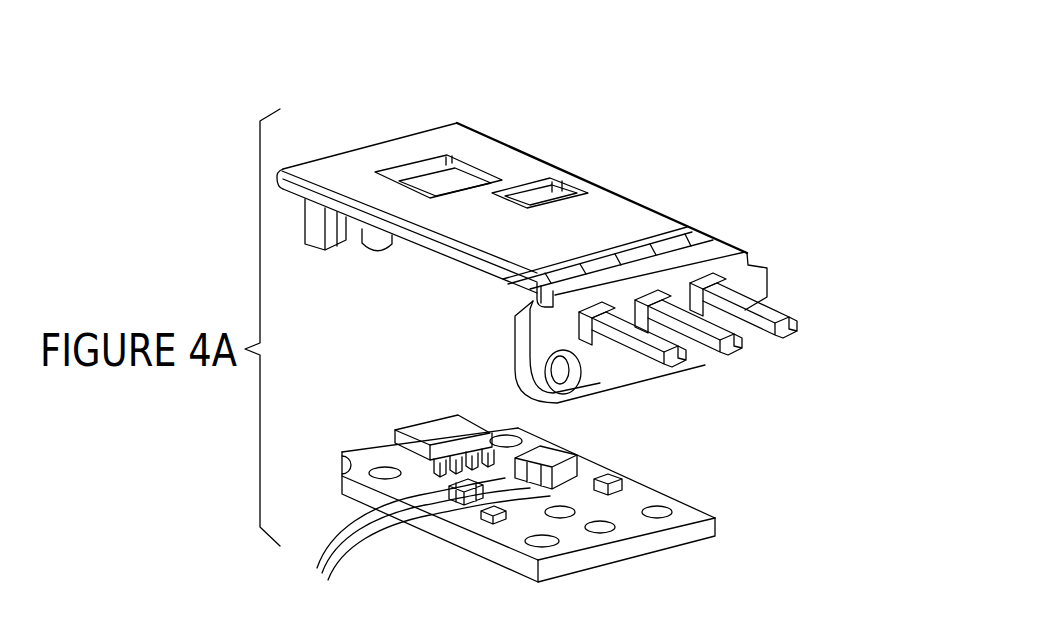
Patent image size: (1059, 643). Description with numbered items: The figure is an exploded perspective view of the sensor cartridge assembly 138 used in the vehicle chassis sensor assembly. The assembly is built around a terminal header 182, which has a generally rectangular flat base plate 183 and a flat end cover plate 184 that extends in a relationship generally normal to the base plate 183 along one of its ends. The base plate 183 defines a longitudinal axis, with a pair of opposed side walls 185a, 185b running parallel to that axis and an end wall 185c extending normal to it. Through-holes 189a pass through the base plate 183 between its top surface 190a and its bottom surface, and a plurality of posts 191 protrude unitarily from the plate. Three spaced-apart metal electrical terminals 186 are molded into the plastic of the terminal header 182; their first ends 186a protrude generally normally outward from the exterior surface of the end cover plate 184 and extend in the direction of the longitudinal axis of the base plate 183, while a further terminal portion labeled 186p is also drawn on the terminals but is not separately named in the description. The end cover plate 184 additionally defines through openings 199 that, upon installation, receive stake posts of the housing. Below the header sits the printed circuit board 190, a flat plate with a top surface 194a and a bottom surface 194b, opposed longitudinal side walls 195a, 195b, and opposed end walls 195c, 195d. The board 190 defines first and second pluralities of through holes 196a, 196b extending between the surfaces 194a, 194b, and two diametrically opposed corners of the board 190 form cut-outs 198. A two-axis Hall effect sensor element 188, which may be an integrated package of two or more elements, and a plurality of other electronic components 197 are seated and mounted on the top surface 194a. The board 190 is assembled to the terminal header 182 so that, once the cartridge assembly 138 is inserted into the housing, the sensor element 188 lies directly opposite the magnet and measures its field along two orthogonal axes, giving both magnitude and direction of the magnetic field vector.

The sensor cartridge assembly 138 is at (676, 90).
The terminal header 182 is at (634, 191).
The base plate 183 is at (532, 157).
The end cover plate 184 is at (773, 282).
The side wall 185a is at (447, 257).
The side wall 185b is at (565, 192).
The end wall 185c is at (375, 140).
The metal electrical terminals 186 is at (703, 369).
The first ends of terminals 186a is at (700, 325).
The pin tip 186p is at (773, 313).
The Hall effect sensor element 188 is at (443, 430).
The through-holes 189a is at (450, 160).
The printed circuit board 190 is at (643, 478).
The top surface of base plate 190a is at (620, 223).
The posts 191 is at (378, 247).
The top surface of board 194a is at (657, 500).
The bottom surface of board 194b is at (678, 549).
The longitudinal side wall 195a is at (442, 539).
The longitudinal side wall 195b is at (665, 452).
The end wall 195c is at (375, 447).
The end wall 195d is at (625, 557).
The first through holes 196a is at (655, 506).
The second through holes 196b is at (370, 472).
The electronic components 197 is at (413, 542).
The cut-outs 198 is at (342, 460).
The through openings 199 is at (555, 372).